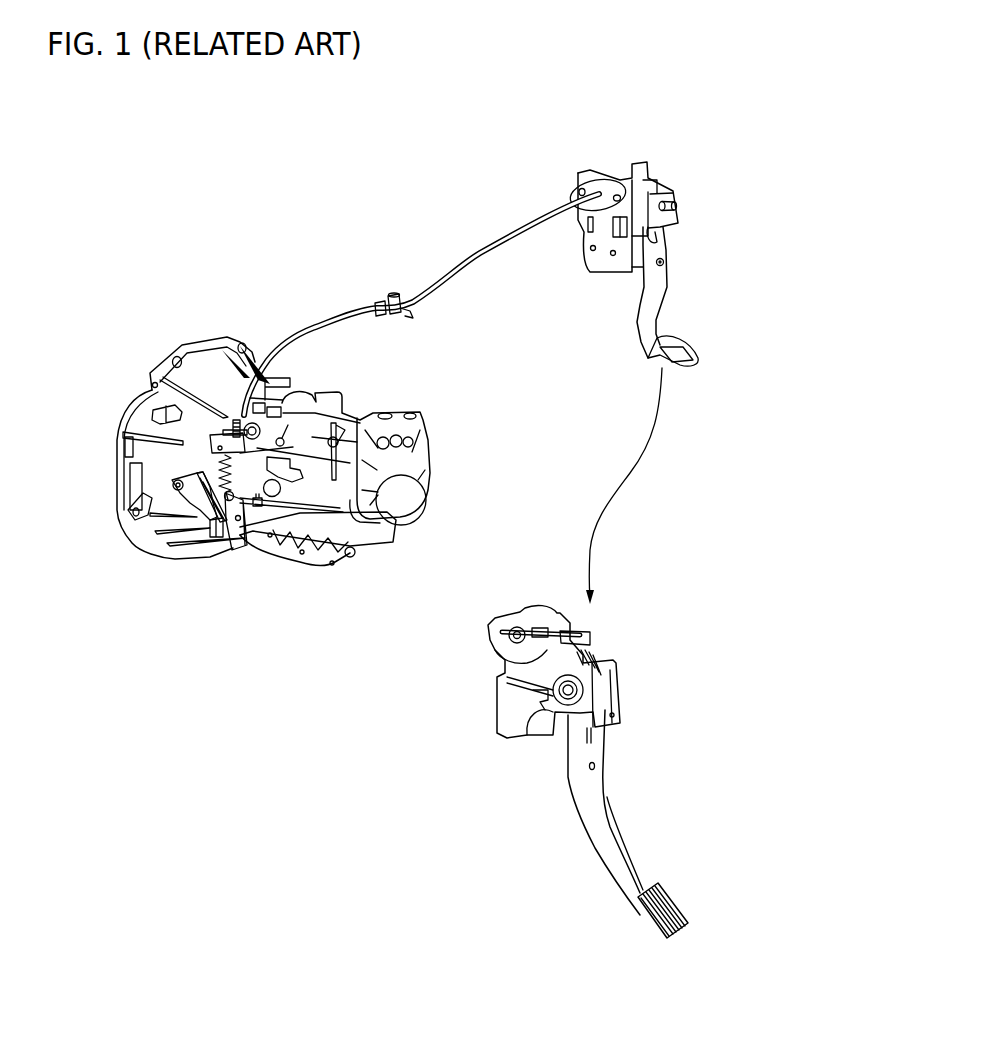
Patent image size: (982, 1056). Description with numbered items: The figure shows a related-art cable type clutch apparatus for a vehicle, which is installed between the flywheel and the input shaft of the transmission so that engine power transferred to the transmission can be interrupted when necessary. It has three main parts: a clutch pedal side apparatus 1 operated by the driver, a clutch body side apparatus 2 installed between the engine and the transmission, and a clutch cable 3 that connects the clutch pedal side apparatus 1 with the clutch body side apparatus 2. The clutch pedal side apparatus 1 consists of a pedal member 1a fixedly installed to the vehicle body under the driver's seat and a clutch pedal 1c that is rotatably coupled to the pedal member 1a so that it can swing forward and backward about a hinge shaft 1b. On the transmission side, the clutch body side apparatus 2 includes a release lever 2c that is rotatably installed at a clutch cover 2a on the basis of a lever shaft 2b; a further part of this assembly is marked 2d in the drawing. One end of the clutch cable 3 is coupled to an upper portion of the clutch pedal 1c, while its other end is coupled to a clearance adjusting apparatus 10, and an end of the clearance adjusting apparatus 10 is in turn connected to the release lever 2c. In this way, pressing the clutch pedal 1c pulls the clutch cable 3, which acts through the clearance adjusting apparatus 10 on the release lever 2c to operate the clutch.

The clutch pedal side apparatus 1 is at (619, 158).
The pedal member 1a is at (674, 190).
The hinge shaft 1b is at (682, 204).
The clutch pedal 1c is at (656, 289).
The clutch body side apparatus 2 is at (194, 334).
The clutch cover 2a is at (155, 382).
The lever shaft 2b is at (176, 482).
The release lever 2c is at (190, 510).
The cable end fitting 2d is at (186, 433).
The clutch cable 3 is at (447, 280).
The clearance adjusting apparatus 10 is at (239, 498).